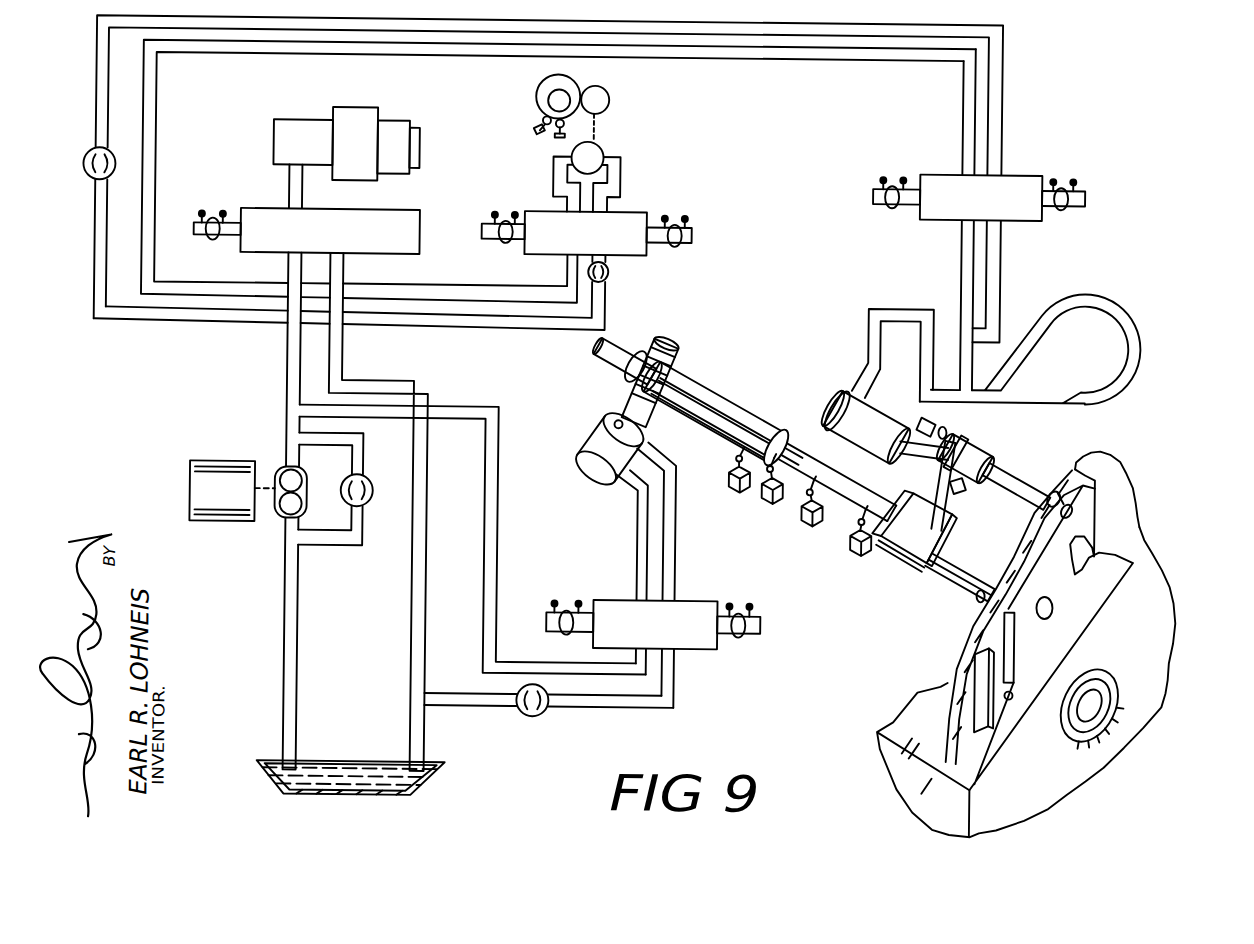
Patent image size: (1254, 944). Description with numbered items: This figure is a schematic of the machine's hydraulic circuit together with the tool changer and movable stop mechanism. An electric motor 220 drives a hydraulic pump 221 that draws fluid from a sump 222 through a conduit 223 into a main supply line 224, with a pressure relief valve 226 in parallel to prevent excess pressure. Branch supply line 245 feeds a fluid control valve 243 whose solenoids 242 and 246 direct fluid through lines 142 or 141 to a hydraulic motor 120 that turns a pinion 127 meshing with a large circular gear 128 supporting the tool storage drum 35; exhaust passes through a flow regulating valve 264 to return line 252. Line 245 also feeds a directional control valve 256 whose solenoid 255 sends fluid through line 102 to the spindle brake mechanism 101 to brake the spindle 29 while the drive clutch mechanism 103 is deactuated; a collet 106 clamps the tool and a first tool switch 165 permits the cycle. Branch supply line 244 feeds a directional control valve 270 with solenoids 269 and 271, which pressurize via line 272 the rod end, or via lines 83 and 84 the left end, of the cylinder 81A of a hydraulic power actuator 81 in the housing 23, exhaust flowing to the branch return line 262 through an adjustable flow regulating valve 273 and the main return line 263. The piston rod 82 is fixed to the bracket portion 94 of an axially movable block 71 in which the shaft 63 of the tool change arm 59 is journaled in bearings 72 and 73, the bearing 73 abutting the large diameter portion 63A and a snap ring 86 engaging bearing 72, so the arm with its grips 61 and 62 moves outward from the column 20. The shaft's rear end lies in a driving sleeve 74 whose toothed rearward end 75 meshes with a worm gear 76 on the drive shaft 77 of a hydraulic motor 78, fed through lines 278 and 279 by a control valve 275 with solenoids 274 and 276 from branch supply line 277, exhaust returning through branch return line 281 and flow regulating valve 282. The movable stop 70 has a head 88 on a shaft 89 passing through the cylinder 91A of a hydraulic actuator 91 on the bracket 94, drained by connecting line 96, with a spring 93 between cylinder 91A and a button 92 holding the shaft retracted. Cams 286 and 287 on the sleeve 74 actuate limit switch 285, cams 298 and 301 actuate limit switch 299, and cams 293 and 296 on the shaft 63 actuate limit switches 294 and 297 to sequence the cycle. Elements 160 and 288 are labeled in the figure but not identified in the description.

The column 20 is at (1152, 604).
The housing 23 is at (1116, 489).
The spindle 29 is at (398, 126).
The tool storage magazine or drum 35 is at (548, 103).
The tool change arm 59 is at (1022, 647).
The grip 61 is at (1004, 637).
The grip 62 is at (1108, 551).
The shaft 63 is at (1056, 599).
The large diameter portion 63A is at (975, 583).
The movable stop 70 is at (1078, 463).
The axially movable block 71 is at (940, 526).
The bearing 72 is at (911, 528).
The bearing 73 is at (925, 580).
The driving sleeve 74 is at (700, 370).
The rearward end of sleeve 75 is at (625, 383).
The worm gear 76 is at (642, 416).
The drive shaft 77 is at (612, 422).
The hydraulic motor 78 is at (578, 460).
The hydraulic power actuator 81 is at (826, 397).
The cylinder 81A is at (838, 389).
The piston rod 82 is at (918, 455).
The hydraulic line 83 is at (962, 246).
The hydraulic line 84 is at (869, 338).
The snap ring 86 is at (890, 494).
The external head portion 88 is at (1060, 480).
The shaft 89 is at (1000, 463).
The hydraulic actuator 91 is at (1000, 427).
The cylinder 91A is at (958, 478).
The button or flange 92 is at (918, 420).
The spring 93 is at (944, 424).
The bracket portion 94 is at (927, 496).
The connecting line 96 is at (1105, 292).
The spindle brake mechanism 101 is at (280, 125).
The line 102 is at (300, 198).
The drive clutch mechanism 103 is at (345, 115).
The collet 106 is at (418, 150).
The hydraulic motor 120 is at (598, 147).
The pinion 127 is at (605, 98).
The large circular gear 128 is at (575, 77).
The line 141 is at (616, 167).
The line 142 is at (551, 170).
The switch 160 is at (533, 126).
The first tool switch 165 is at (548, 136).
The electric motor 220 is at (192, 480).
The hydraulic pump 221 is at (281, 517).
The sump 222 is at (433, 773).
The conduit 223 is at (286, 606).
The main supply conduit 224 is at (286, 387).
The pressure relief valve 226 is at (368, 481).
The solenoid 242 is at (492, 212).
The fluid control valve 243 is at (560, 262).
The branch supply line 244 is at (965, 125).
The branch supply line 245 is at (380, 293).
The solenoid 246 is at (670, 249).
The return line 252 is at (549, 323).
The solenoid 255 is at (203, 212).
The fluid directional control valve 256 is at (258, 262).
The branch return line 262 is at (1000, 76).
The main return line 263 is at (349, 389).
The flow regulating valve 264 is at (608, 272).
The solenoid 269 is at (880, 202).
The directional control valve 270 is at (1043, 225).
The solenoid 271 is at (1087, 180).
The line 272 is at (999, 265).
The adjustable flow regulating valve 273 is at (80, 169).
The solenoid 274 is at (764, 607).
The control valve 275 is at (691, 655).
The solenoid 276 is at (553, 605).
The branch supply line 277 is at (489, 548).
The line 278 is at (674, 554).
The line 279 is at (641, 550).
The branch return line 281 is at (628, 703).
The flow regulating valve 282 is at (546, 714).
The limit switch 285 is at (783, 497).
The cam 286 is at (790, 462).
The cam 287 is at (747, 479).
The piston rod 288 is at (785, 444).
The cam 293 is at (843, 507).
The limit switch 294 is at (866, 548).
The cam 296 is at (800, 518).
The limit switch 297 is at (810, 525).
The cam 298 is at (758, 405).
The limit switch 299 is at (729, 478).
The second cam 301 is at (738, 449).